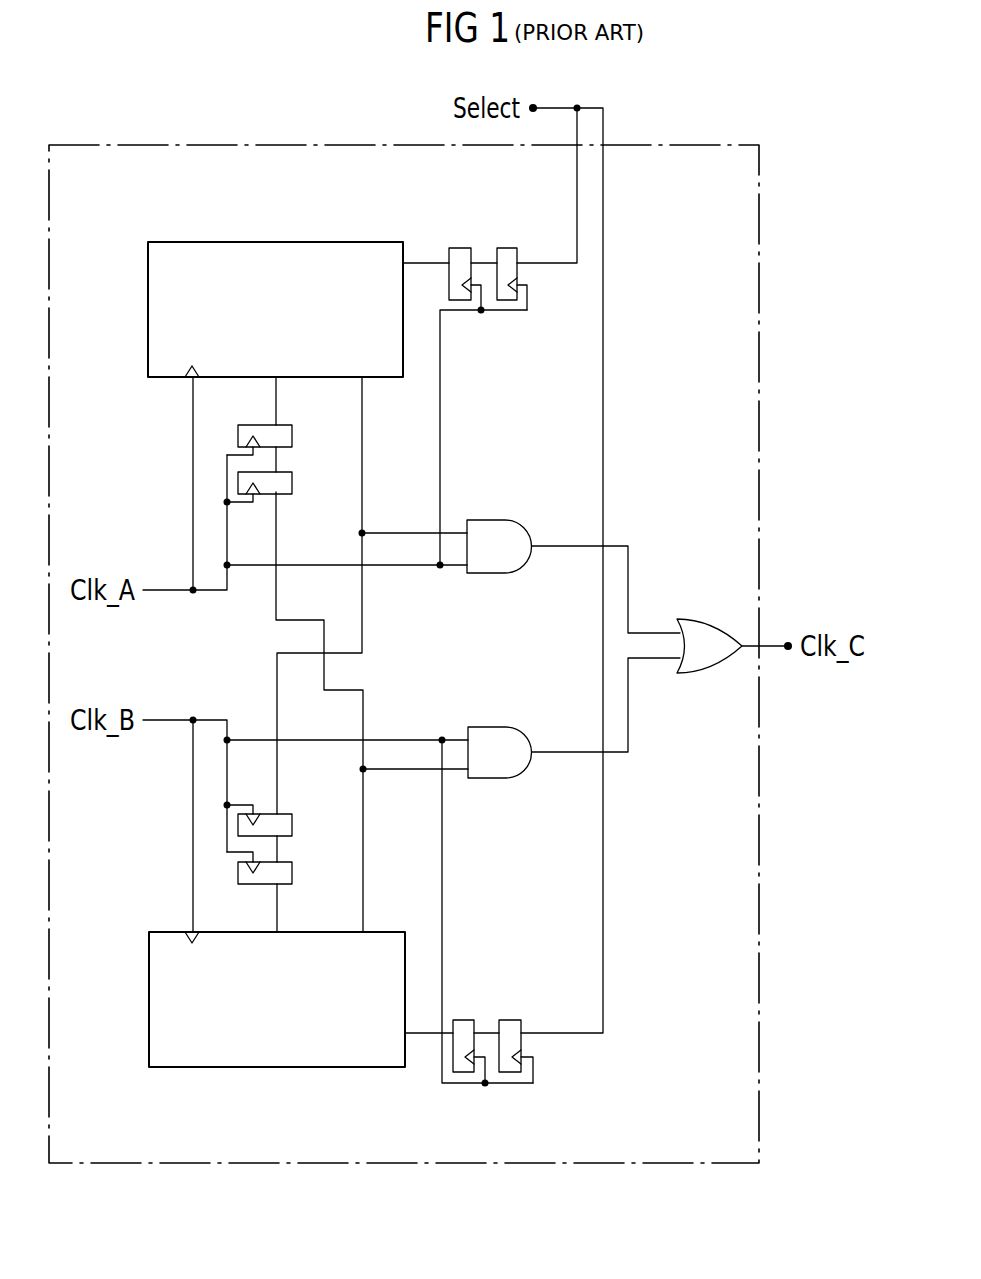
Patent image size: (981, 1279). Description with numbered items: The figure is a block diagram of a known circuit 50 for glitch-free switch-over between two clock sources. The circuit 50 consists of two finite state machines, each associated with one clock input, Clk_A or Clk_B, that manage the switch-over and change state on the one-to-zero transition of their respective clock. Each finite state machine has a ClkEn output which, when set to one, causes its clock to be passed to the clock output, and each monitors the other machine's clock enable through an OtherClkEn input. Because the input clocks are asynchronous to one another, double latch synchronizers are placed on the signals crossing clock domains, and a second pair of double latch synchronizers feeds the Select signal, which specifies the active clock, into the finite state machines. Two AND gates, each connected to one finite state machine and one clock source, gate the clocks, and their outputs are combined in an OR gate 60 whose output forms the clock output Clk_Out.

The circuit 50 is at (450, 1163).
The OR gate 60 is at (690, 618).